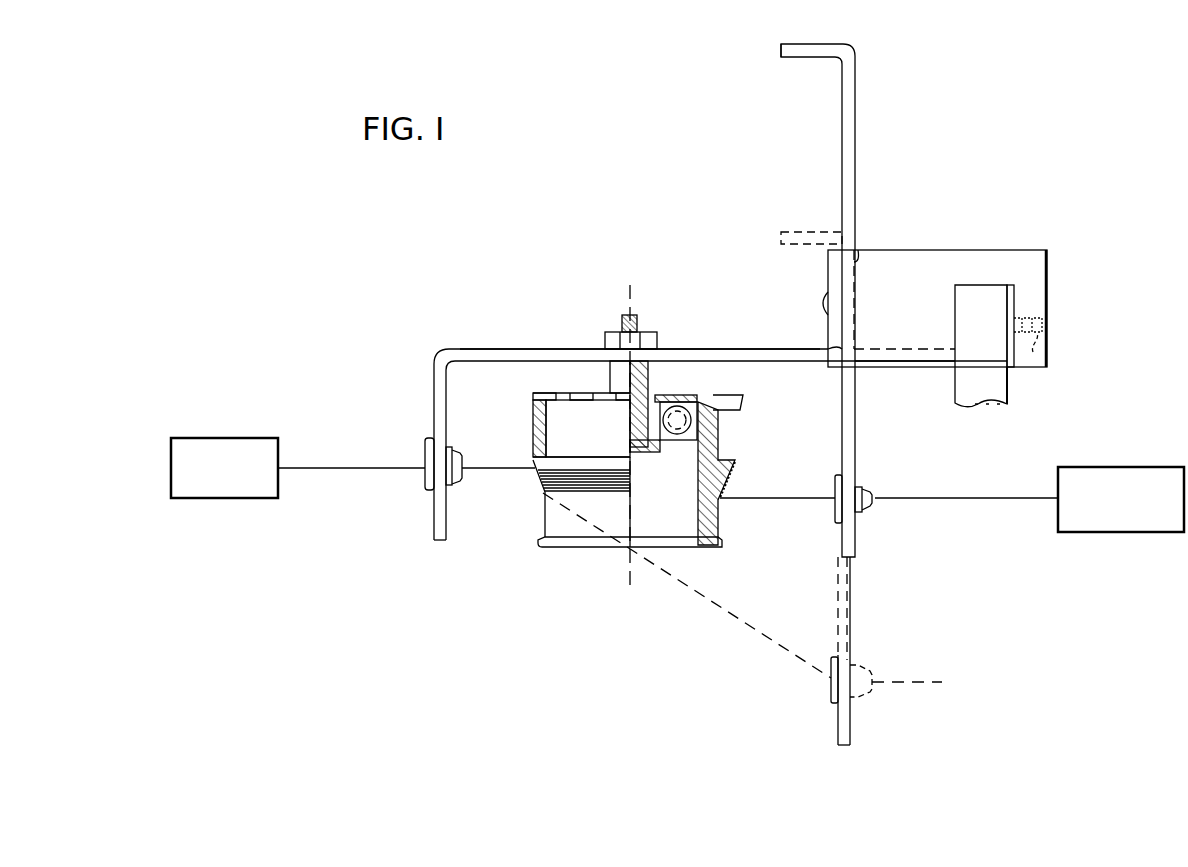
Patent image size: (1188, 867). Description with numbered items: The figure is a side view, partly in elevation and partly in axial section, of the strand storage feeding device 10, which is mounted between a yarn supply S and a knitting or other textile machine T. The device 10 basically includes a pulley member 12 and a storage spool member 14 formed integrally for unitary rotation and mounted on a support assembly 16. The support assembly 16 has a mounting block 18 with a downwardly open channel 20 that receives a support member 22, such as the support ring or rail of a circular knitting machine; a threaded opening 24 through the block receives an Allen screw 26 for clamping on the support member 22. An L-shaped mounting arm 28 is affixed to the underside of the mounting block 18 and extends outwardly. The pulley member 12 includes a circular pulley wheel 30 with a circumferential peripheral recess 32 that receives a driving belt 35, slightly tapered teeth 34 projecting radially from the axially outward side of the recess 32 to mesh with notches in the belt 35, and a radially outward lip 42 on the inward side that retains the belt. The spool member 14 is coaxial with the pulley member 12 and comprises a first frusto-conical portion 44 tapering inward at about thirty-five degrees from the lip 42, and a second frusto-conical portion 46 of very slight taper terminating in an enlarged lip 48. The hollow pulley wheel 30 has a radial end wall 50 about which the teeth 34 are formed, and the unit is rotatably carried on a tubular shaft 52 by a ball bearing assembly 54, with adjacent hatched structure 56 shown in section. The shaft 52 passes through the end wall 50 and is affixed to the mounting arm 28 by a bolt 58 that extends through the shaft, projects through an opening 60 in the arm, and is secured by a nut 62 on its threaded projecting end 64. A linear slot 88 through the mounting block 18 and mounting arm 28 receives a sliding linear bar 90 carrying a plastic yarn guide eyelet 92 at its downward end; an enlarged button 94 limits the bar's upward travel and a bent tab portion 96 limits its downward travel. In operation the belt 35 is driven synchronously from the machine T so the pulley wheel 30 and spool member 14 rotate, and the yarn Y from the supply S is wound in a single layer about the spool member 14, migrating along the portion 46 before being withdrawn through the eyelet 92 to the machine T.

The storage feeding device 10 is at (488, 597).
The pulley member 12 is at (538, 455).
The storage spool member 14 is at (545, 520).
The support assembly 16 is at (857, 363).
The mounting block 18 is at (900, 308).
The channel 20 is at (1005, 380).
The support member 22 is at (993, 337).
The threaded opening 24 is at (1033, 352).
The Allen screw 26 is at (1046, 327).
The mounting arm 28 is at (484, 347).
The pulley wheel 30 is at (553, 396).
The peripheral recess 32 is at (588, 440).
The teeth 34 is at (533, 397).
The driving belt 35 is at (533, 425).
The lip 42 is at (735, 462).
The first frusto-conical portion 44 is at (536, 462).
The second frusto-conical portion 46 is at (617, 517).
The enlarged lip 48 is at (583, 547).
The radial end wall 50 is at (672, 397).
The tubular shaft 52 is at (650, 385).
The ball bearing assembly 54 is at (720, 398).
The post foot 56 is at (642, 436).
The bolt 58 is at (610, 398).
The opening 60 is at (640, 330).
The nut 62 is at (652, 342).
The threaded projecting end 64 is at (638, 326).
The linear slot 88 is at (858, 262).
The linear bar 90 is at (852, 150).
The yarn guide eyelet 92 is at (860, 668).
The button 94 is at (842, 362).
The tab portion 96 is at (813, 57).
The yarn supply S is at (278, 497).
The textile machine T is at (1105, 532).
The yarn Y is at (380, 468).